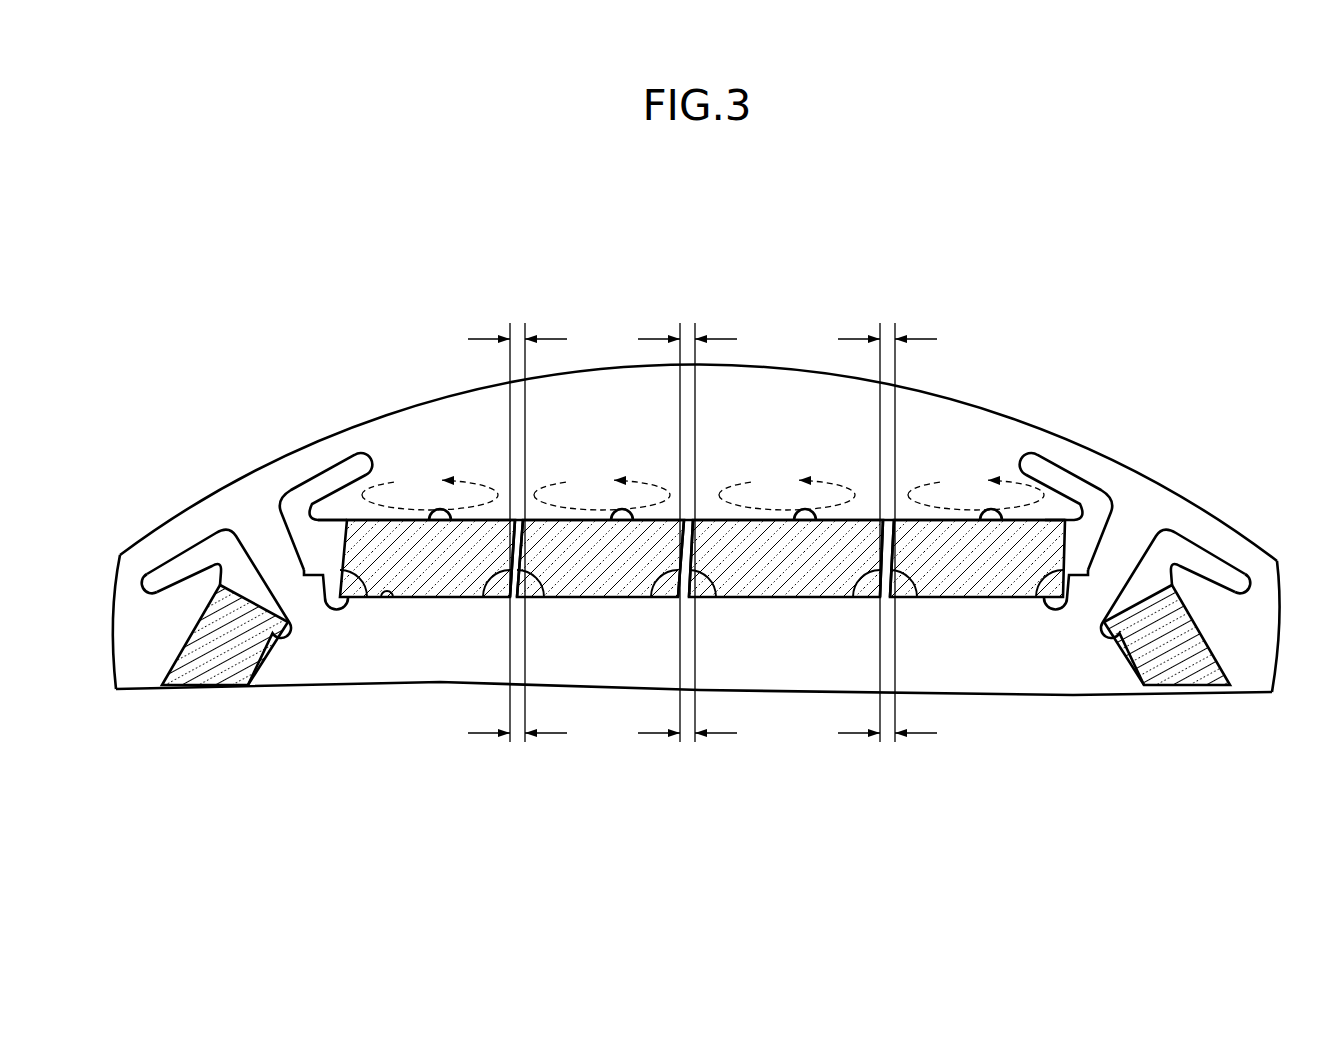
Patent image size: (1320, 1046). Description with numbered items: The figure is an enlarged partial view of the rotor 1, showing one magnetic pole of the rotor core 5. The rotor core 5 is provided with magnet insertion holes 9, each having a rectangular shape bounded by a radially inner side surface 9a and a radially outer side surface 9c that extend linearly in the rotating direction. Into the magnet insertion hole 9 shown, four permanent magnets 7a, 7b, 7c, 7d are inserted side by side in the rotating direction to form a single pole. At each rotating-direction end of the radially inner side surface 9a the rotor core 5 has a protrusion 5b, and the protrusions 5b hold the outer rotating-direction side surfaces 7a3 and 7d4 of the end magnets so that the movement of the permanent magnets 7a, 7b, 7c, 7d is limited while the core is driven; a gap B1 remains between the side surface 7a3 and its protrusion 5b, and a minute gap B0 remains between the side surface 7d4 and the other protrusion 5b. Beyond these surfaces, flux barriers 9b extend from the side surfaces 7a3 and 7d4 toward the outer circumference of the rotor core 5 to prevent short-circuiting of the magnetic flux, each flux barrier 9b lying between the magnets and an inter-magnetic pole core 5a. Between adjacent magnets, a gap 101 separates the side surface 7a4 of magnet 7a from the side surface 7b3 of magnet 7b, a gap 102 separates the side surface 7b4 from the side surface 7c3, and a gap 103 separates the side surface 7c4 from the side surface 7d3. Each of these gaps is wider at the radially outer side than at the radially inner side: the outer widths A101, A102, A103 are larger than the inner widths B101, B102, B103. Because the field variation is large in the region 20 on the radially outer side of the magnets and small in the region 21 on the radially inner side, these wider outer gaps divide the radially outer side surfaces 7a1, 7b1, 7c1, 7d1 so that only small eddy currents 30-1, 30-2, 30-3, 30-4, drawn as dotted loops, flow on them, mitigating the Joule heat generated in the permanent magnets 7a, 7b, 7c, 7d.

The rotor 1 is at (913, 224).
The rotor core 5 is at (1010, 418).
The inter-magnetic pole core 5a is at (265, 520).
The protrusion 5b is at (312, 588).
The permanent magnet 7a is at (410, 598).
The permanent magnet 7b is at (583, 598).
The permanent magnet 7c is at (768, 598).
The permanent magnet 7d is at (957, 598).
The radially outer side surface 7a1 is at (440, 531).
The radially outer side surface 7b1 is at (622, 531).
The radially outer side surface 7c1 is at (805, 531).
The radially outer side surface 7d1 is at (991, 531).
The rotating-direction side surface 7a3 is at (367, 598).
The rotating-direction side surface 7a4 is at (483, 598).
The rotating-direction side surface 7b3 is at (545, 598).
The rotating-direction side surface 7b4 is at (662, 598).
The rotating-direction side surface 7c3 is at (716, 598).
The rotating-direction side surface 7c4 is at (855, 598).
The rotating-direction side surface 7d3 is at (917, 598).
The rotating-direction side surface 7d4 is at (1040, 598).
The magnet insertion hole 9 is at (697, 516).
The radially inner side surface 9a is at (392, 600).
The flux barrier 9b is at (295, 500).
The radially outer side surface 9c is at (358, 518).
The region on the radially outer side 20 is at (810, 372).
The region on the radially inner side 21 is at (790, 692).
The eddy current 30-1 is at (395, 482).
The eddy current 30-2 is at (567, 482).
The eddy current 30-3 is at (752, 482).
The eddy current 30-4 is at (941, 482).
The gap 101 is at (514, 518).
The gap 102 is at (684, 518).
The gap 103 is at (883, 518).
The gap on the radially outer side A101 is at (517, 335).
The gap on the radially outer side A102 is at (687, 335).
The gap on the radially outer side A103 is at (887, 335).
The gap on the radially inner side B101 is at (517, 737).
The gap on the radially inner side B102 is at (687, 737).
The gap on the radially inner side B103 is at (887, 737).
The gap B1 is at (328, 612).
The gap B0 is at (1068, 600).